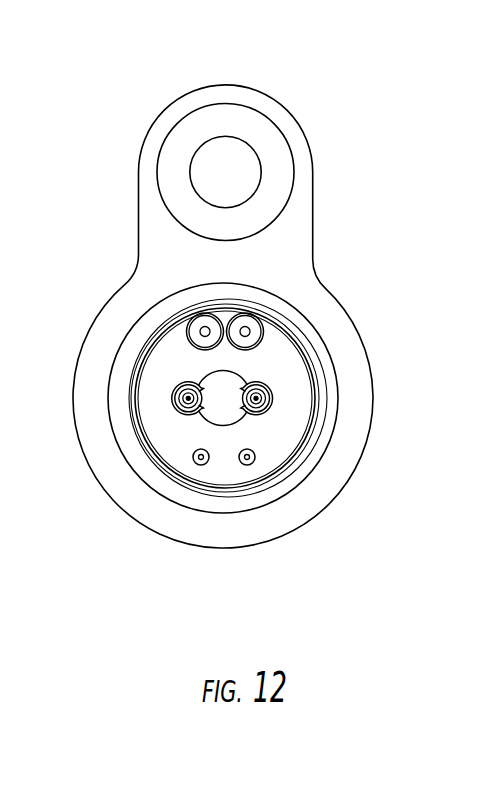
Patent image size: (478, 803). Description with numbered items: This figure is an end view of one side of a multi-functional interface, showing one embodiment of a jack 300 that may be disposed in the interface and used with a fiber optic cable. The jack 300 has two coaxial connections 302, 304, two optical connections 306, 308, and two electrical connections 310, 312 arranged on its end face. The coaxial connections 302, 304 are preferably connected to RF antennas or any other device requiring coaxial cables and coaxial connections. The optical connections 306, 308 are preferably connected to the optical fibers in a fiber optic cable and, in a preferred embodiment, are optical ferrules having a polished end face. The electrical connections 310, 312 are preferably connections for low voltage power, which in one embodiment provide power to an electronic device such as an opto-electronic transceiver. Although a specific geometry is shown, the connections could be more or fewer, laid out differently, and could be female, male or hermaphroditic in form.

The jack 300 is at (381, 299).
The coaxial connection 302 is at (256, 318).
The coaxial connection 304 is at (206, 322).
The optical connection 306 is at (270, 390).
The optical connection 308 is at (184, 411).
The electrical connection 310 is at (256, 463).
The electrical connection 312 is at (209, 463).